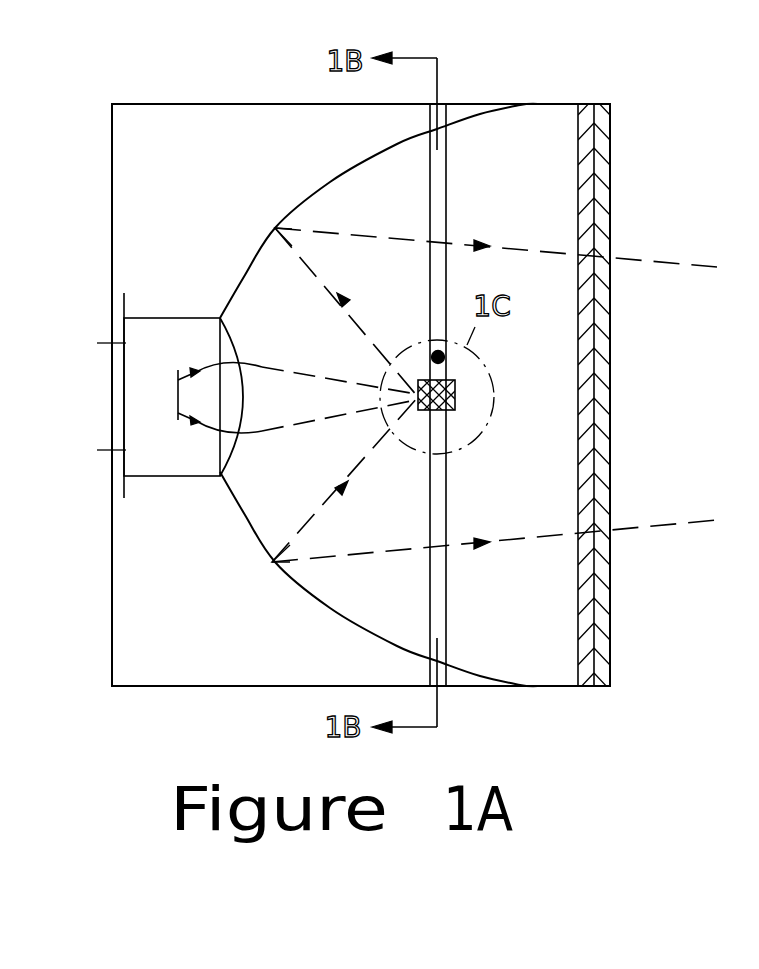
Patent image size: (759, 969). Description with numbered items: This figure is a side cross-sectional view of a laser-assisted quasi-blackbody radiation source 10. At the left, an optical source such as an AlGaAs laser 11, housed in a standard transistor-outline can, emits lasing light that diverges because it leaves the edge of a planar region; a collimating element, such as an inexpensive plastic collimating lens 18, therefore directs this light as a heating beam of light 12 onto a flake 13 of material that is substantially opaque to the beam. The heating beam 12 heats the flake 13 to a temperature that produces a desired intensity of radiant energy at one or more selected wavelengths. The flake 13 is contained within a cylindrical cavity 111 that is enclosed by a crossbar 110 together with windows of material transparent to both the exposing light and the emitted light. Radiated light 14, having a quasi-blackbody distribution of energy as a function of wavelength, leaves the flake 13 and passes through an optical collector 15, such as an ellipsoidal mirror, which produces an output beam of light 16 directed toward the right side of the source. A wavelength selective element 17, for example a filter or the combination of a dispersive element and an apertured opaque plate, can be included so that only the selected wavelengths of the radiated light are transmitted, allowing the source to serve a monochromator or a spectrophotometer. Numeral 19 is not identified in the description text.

The laser-assisted quasi-blackbody radiation source 10 is at (632, 748).
The AlGaAs laser 11 is at (195, 335).
The heating beam of light 12 is at (270, 399).
The flake 13 is at (455, 410).
The radiated light 14 is at (322, 278).
The optical collector 15 is at (265, 558).
The output beam of light 16 is at (675, 262).
The wavelength selective element 17 is at (600, 598).
The collimating lens 18 is at (342, 479).
The diffuser layer 19 is at (585, 203).
The crossbar 110 is at (437, 593).
The cylindrical cavity 111 is at (432, 348).